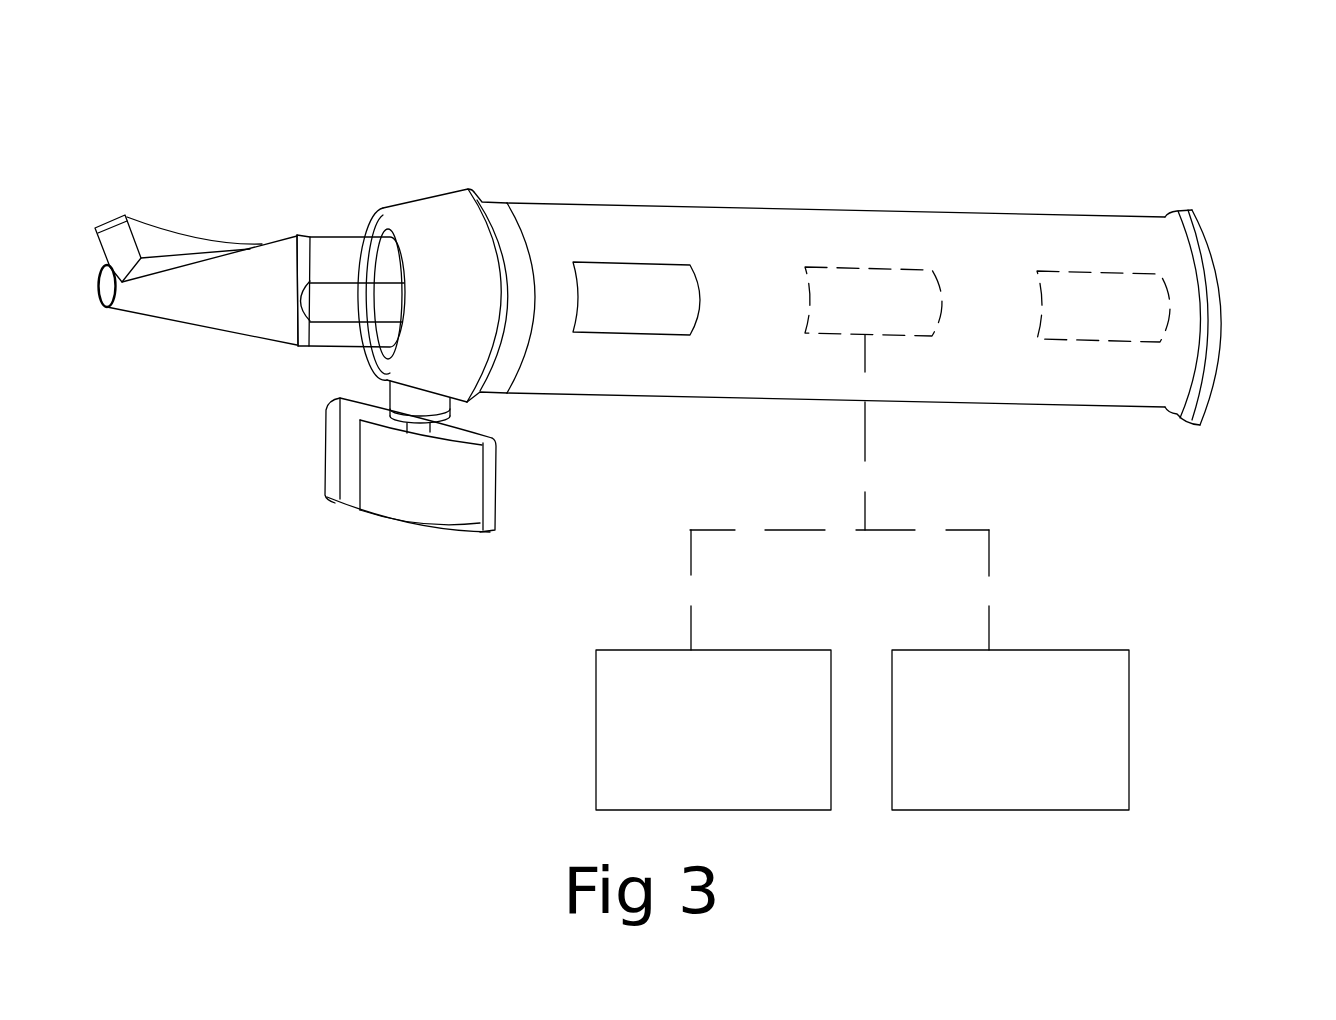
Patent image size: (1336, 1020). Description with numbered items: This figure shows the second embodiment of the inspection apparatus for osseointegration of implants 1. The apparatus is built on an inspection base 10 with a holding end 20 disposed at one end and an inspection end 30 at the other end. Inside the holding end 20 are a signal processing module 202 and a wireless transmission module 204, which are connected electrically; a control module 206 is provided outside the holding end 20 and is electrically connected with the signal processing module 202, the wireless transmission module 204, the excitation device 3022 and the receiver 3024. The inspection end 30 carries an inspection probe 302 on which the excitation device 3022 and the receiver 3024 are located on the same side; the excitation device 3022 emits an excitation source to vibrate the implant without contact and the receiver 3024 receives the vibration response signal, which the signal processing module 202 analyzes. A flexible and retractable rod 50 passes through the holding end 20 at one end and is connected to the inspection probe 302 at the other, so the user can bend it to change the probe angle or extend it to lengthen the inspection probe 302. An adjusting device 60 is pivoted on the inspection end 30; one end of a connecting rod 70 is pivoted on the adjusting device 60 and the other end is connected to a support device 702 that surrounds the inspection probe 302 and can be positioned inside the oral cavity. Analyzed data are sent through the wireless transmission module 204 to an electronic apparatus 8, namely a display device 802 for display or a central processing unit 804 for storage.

The inspection apparatus for osseointegration of implants 1 is at (1327, 77).
The inspection base 10 is at (1103, 440).
The holding end 20 is at (1183, 317).
The signal processing module 202 is at (1096, 313).
The wireless transmission module 204 is at (863, 305).
The control module 206 is at (630, 303).
The inspection end 30 is at (497, 207).
The flexible and retractable rod 50 is at (337, 247).
The adjusting device 60 is at (442, 210).
The connecting rod 70 is at (432, 404).
The support device 702 is at (463, 497).
The inspection probe 302 is at (133, 350).
The excitation device 3022 is at (158, 248).
The receiver 3024 is at (262, 307).
The electronic apparatus 8 is at (905, 500).
The display device 802 is at (1130, 716).
The central processing unit 804 is at (596, 698).